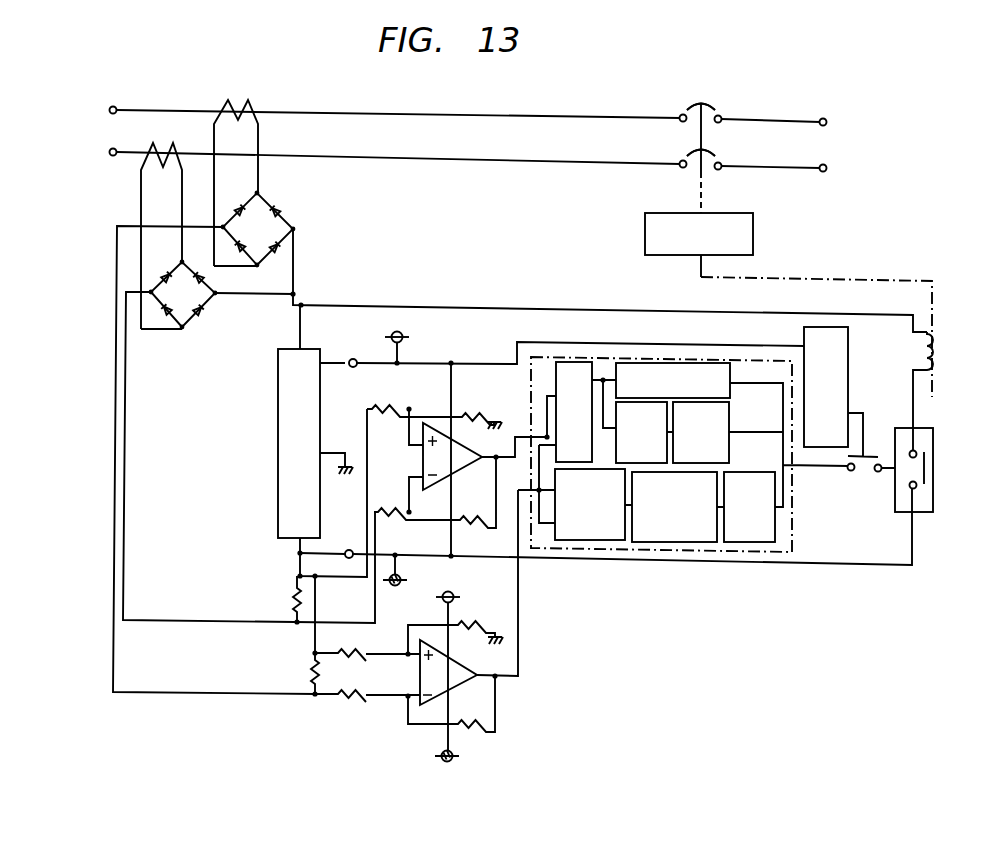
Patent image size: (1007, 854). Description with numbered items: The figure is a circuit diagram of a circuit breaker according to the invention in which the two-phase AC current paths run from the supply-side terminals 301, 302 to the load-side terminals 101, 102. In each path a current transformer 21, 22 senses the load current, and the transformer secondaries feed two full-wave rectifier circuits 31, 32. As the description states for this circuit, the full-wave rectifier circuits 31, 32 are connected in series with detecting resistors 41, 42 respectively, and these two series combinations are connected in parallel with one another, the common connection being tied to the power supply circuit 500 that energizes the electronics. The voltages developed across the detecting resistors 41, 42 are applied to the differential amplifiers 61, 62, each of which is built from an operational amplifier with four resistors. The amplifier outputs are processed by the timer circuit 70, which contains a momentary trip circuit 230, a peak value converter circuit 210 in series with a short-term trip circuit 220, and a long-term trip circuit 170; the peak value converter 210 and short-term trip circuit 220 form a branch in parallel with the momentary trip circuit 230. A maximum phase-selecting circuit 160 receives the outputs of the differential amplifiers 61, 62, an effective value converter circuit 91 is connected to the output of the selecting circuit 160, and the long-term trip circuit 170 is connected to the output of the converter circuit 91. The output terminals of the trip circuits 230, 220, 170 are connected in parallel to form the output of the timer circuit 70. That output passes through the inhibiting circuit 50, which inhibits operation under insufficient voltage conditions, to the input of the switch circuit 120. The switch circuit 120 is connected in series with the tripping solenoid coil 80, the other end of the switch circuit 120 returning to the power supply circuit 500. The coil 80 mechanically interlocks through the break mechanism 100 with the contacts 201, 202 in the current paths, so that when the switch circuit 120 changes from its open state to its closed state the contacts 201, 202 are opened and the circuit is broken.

The power source terminal 301 is at (108, 110).
The power source terminal 302 is at (108, 152).
The load terminal 101 is at (827, 122).
The load terminal 102 is at (827, 168).
The current transformer 21 is at (254, 104).
The current transformer 22 is at (179, 147).
The full-wave rectifier circuit 31 is at (290, 202).
The full-wave rectifier circuit 32 is at (207, 345).
The contact 201 is at (681, 112).
The contact 202 is at (681, 160).
The break mechanism 100 is at (754, 231).
The power supply circuit 500 is at (278, 412).
The differential amplifier 62 is at (440, 425).
The differential amplifier 61 is at (467, 688).
The current-detecting resistor 42 is at (290, 593).
The current-detecting resistor 41 is at (310, 666).
The timer circuit 70 is at (610, 355).
The peak value converter circuit 210 is at (611, 398).
The momentary trip circuit 230 is at (731, 390).
The short-term trip circuit 220 is at (729, 450).
The maximum phase-selecting circuit 160 is at (572, 541).
The effective value converter circuit 91 is at (647, 543).
The long-term trip circuit 170 is at (736, 545).
The inhibiting circuit 50 is at (849, 342).
The tripping solenoid coil 80 is at (940, 345).
The switch circuit 120 is at (935, 438).